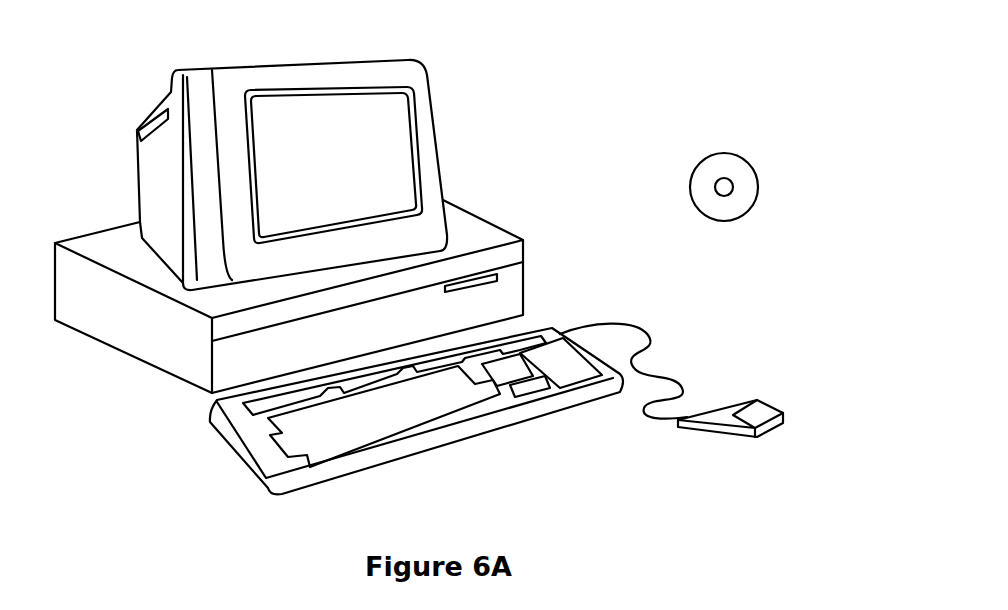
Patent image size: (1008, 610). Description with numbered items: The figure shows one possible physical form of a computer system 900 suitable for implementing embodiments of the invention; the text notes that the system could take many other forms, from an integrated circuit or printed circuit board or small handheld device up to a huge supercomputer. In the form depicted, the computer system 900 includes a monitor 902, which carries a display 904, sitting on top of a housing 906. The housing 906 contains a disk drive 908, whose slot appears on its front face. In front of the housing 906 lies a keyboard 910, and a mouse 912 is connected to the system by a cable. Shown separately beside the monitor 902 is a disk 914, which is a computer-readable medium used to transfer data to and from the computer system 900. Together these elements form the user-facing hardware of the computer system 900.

The computer system 900 is at (645, 37).
The monitor 902 is at (440, 173).
The display 904 is at (400, 125).
The housing 906 is at (160, 377).
The disk drive 908 is at (497, 277).
The keyboard 910 is at (430, 450).
The mouse 912 is at (770, 408).
The disk 914 is at (742, 155).